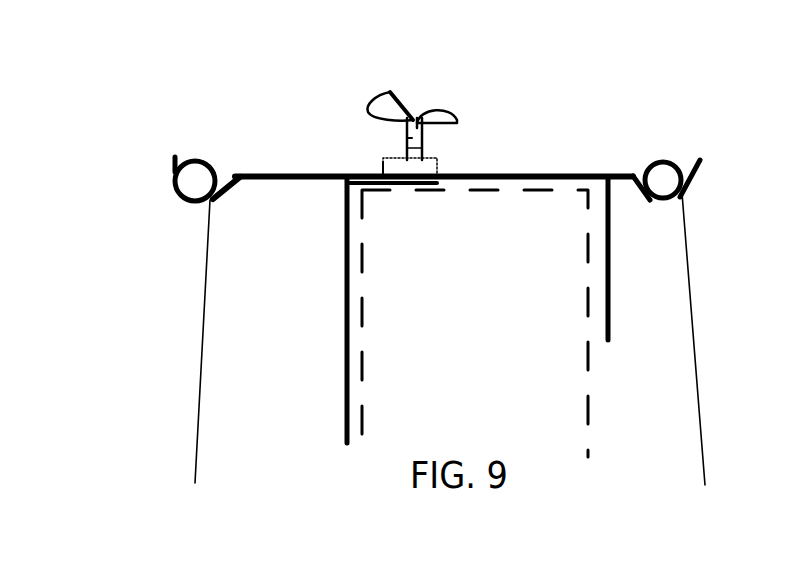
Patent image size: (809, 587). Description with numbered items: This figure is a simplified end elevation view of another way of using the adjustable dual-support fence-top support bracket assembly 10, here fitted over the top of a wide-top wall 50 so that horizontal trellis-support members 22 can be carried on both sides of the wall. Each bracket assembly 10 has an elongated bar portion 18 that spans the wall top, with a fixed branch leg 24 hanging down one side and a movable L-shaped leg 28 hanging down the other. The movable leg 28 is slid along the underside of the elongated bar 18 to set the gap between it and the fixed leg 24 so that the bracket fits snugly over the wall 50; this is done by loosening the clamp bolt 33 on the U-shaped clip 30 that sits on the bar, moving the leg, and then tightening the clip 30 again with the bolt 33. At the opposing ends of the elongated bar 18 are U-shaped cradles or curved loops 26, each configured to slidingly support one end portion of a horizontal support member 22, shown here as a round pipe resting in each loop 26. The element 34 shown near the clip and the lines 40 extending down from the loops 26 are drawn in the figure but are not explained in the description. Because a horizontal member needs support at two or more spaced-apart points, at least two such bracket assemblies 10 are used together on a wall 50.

The fence-top support bracket assembly 10 is at (548, 130).
The elongated bar 18 is at (270, 173).
The horizontal support member 22 is at (213, 167).
The fixed leg 24 is at (613, 242).
The U-shaped cradle 26 is at (177, 197).
The movable L-shaped leg 28 is at (340, 362).
The U-shaped clip 30 is at (437, 160).
The clamp bolt 33 is at (363, 107).
The fastener cap 34 is at (393, 93).
The side wall 40 is at (200, 397).
The wall 50 is at (590, 390).